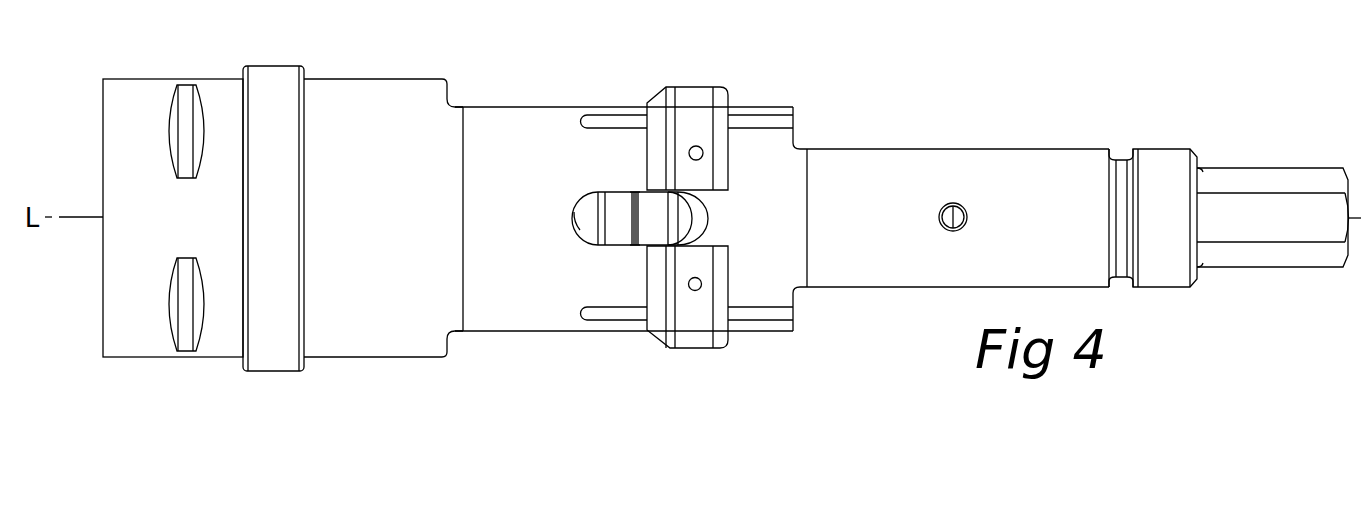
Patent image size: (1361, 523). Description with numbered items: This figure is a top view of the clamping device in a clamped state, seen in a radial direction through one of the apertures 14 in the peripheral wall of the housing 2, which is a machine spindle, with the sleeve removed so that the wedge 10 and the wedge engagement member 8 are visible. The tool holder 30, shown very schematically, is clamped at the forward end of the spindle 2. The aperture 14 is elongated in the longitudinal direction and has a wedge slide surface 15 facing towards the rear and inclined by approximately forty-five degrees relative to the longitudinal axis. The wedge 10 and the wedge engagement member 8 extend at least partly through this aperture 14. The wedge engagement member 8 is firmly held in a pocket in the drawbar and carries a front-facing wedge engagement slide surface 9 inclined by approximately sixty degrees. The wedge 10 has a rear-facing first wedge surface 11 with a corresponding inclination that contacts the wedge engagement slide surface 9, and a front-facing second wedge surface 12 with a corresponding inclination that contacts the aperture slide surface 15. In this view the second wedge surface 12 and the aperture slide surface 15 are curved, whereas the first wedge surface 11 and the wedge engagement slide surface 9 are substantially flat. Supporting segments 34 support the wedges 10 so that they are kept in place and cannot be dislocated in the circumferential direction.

The tool holder 30 is at (132, 93).
The housing 2 is at (487, 130).
The second wedge surface 12 is at (583, 207).
The wedge engagement slide surface 9 is at (638, 215).
The first wedge surface 11 is at (637, 192).
The wedge engagement member 8 is at (683, 213).
The wedge slide surface 15 is at (576, 222).
The wedge 10 is at (638, 218).
The aperture 14 is at (637, 245).
The supporting segment 34 is at (693, 328).